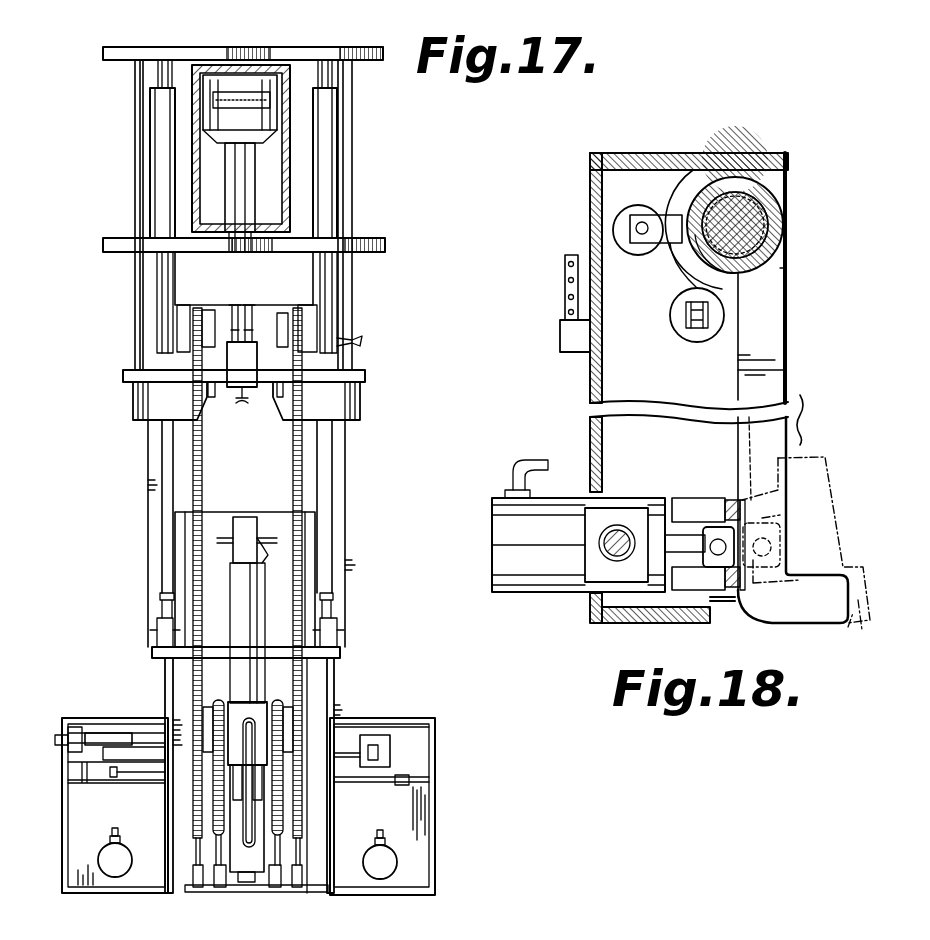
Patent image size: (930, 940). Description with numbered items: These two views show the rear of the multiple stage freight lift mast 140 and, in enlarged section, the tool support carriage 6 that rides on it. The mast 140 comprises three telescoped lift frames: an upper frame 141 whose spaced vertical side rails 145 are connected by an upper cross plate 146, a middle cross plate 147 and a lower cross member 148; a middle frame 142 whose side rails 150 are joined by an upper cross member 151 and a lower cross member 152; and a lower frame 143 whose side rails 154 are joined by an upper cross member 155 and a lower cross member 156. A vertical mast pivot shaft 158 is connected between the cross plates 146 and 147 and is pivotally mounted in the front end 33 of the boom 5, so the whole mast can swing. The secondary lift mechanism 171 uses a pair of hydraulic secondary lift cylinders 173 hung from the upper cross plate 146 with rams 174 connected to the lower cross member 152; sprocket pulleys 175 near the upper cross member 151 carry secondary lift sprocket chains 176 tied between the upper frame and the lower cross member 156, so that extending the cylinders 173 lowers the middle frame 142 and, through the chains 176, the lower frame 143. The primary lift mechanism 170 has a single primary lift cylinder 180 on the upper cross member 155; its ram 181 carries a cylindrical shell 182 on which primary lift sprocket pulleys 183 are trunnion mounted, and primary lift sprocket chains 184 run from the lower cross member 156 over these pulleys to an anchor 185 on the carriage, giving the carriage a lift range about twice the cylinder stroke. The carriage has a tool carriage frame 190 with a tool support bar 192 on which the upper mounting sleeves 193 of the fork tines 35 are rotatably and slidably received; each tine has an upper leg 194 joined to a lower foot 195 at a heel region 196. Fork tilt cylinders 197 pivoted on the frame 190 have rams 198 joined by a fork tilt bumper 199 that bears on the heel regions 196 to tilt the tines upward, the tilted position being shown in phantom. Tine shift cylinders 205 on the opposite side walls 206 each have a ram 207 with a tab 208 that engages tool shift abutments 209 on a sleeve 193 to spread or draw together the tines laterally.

In FIG. 17, the boom assembly 5 is at (192, 163).
In FIG. 17, the tool support carriage 6 is at (60, 716).
In FIG. 18, the tool support carriage 6 is at (590, 152).
In FIG. 17, the front end of the boom 33 is at (290, 190).
In FIG. 17, the fork tines 35 is at (100, 735).
In FIG. 18, the fork tines 35 is at (838, 640).
In FIG. 17, the mast 140 is at (180, 46).
In FIG. 17, the upper frame 141 is at (358, 298).
In FIG. 17, the middle frame 142 is at (352, 527).
In FIG. 17, the lower frame 143 is at (337, 677).
In FIG. 17, the side rails 145 is at (135, 108).
In FIG. 17, the upper cross plate 146 is at (103, 58).
In FIG. 17, the middle cross plate 147 is at (103, 250).
In FIG. 17, the lower cross member 148 is at (123, 378).
In FIG. 17, the side rails 150 is at (148, 462).
In FIG. 17, the upper cross member 151 is at (228, 305).
In FIG. 17, the lower cross member 152 is at (152, 652).
In FIG. 17, the side rails 154 is at (165, 676).
In FIG. 17, the upper cross member 155 is at (217, 515).
In FIG. 17, the lower cross member 156 is at (192, 885).
In FIG. 17, the mast pivot shaft 158 is at (248, 80).
In FIG. 17, the primary lift mechanism 170 is at (230, 571).
In FIG. 17, the secondary lift mechanism 171 is at (337, 152).
In FIG. 17, the secondary lift cylinders 173 is at (150, 198).
In FIG. 17, the rams 174 is at (160, 516).
In FIG. 17, the sprocket pulleys 175 is at (208, 305).
In FIG. 17, the secondary lift sprocket chains 176 is at (292, 432).
In FIG. 17, the primary lift cylinder 180 is at (277, 537).
In FIG. 17, the ram 181 is at (265, 790).
In FIG. 17, the cylindrical shell 182 is at (265, 850).
In FIG. 17, the primary lift sprocket pulleys 183 is at (213, 715).
In FIG. 17, the primary lift sprocket chains 184 is at (218, 815).
In FIG. 18, the primary lift sprocket chains 184 is at (565, 272).
In FIG. 18, the anchor 185 is at (560, 333).
In FIG. 17, the tool carriage frame 190 is at (440, 707).
In FIG. 18, the tool carriage frame 190 is at (772, 152).
In FIG. 17, the tool support bar 192 is at (392, 745).
In FIG. 18, the tool support bar 192 is at (727, 200).
In FIG. 18, the upper mounting sleeves 193 is at (775, 205).
In FIG. 18, the upper leg 194 is at (778, 292).
In FIG. 18, the lower foot 195 is at (838, 602).
In FIG. 18, the heel region 196 is at (757, 605).
In FIG. 17, the fork tilt cylinders 197 is at (105, 850).
In FIG. 18, the fork tilt cylinders 197 is at (545, 592).
In FIG. 18, the rams 198 is at (683, 535).
In FIG. 18, the fork tilt bumper 199 is at (735, 515).
In FIG. 17, the tine shift cylinders 205 is at (85, 745).
In FIG. 18, the tine shift cylinders 205 is at (613, 220).
In FIG. 17, the side walls 206 is at (62, 798).
In FIG. 18, the side walls 206 is at (615, 377).
In FIG. 18, the ram 207 is at (642, 222).
In FIG. 18, the tab 208 is at (670, 258).
In FIG. 18, the tool shift abutments 209 is at (688, 170).